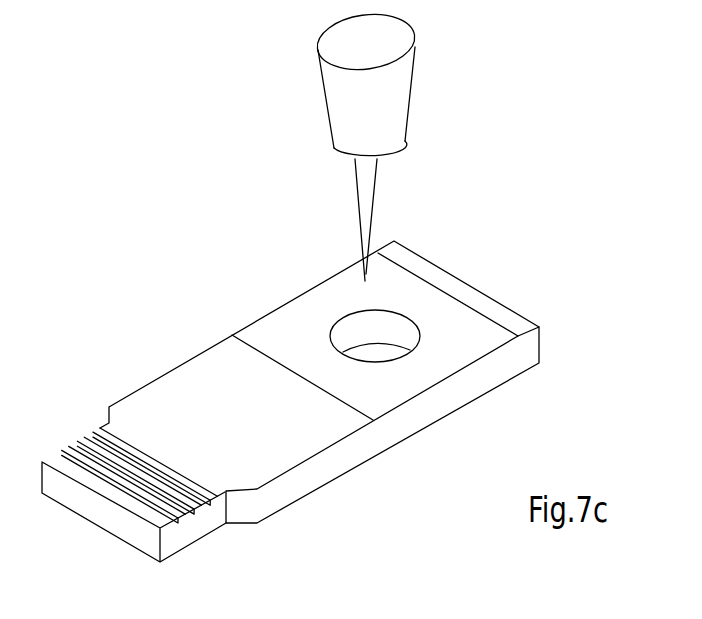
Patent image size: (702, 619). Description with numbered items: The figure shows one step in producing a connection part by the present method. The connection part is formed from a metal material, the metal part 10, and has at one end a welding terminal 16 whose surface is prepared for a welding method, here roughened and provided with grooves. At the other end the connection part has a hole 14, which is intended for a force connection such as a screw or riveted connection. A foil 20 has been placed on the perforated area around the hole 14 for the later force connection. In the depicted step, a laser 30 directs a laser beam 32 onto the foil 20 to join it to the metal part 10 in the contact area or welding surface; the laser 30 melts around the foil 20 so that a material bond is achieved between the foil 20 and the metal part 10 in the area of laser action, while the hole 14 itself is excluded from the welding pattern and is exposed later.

The metal part 10 is at (205, 393).
The hole 14 is at (362, 327).
The welding terminal 16 is at (90, 438).
The foil 20 is at (285, 328).
The laser 30 is at (393, 98).
The laser beam 32 is at (370, 185).